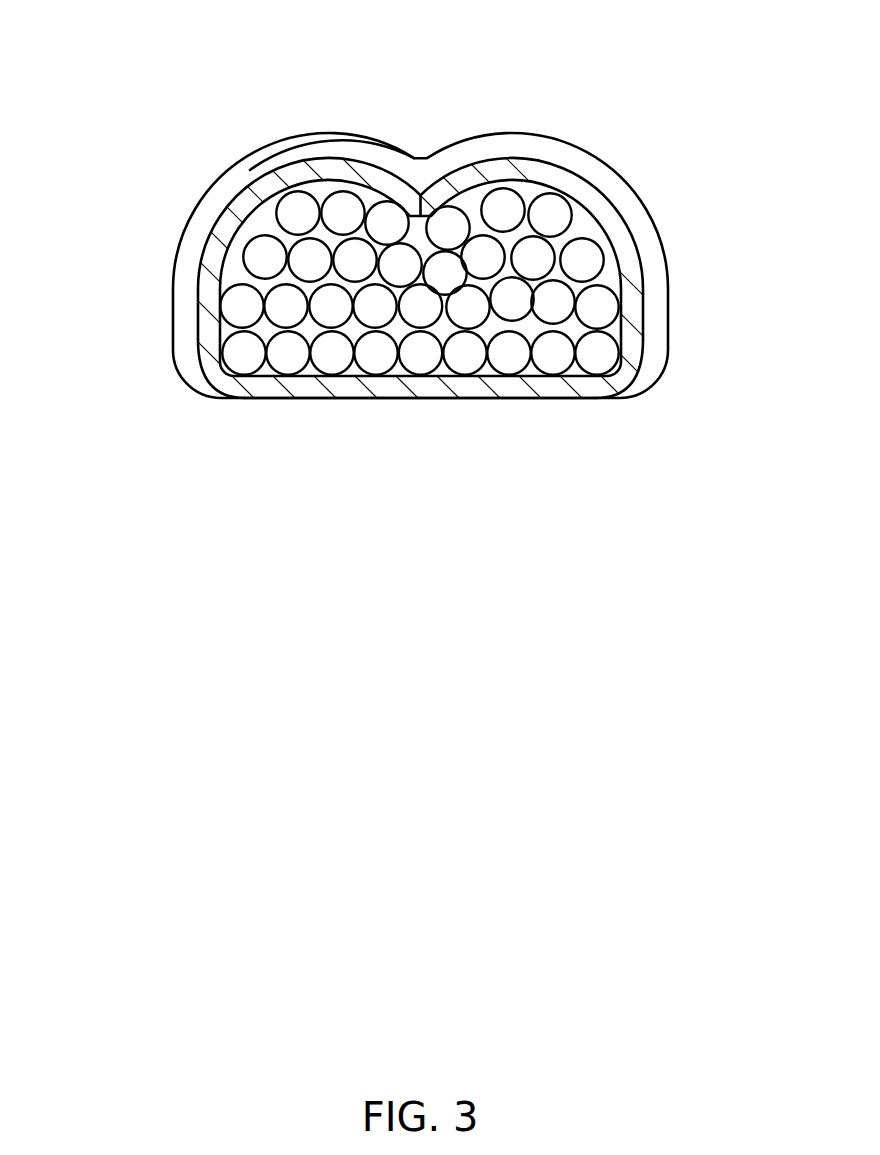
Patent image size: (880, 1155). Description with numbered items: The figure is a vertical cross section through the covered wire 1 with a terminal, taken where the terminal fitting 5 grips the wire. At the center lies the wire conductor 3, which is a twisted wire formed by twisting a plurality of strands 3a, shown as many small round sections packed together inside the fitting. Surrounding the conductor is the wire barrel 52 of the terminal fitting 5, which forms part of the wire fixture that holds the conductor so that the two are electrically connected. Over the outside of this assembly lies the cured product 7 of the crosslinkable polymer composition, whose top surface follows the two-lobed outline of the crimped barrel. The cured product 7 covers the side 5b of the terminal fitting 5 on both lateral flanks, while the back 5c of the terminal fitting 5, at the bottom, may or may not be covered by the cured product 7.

The covered wire with a terminal 1 is at (386, 284).
The wire conductor 3 is at (419, 375).
The strands 3a is at (323, 312).
The terminal fitting 5 is at (385, 306).
The side of the terminal fitting 5b is at (198, 338).
The back of the terminal fitting 5c is at (594, 398).
The wire barrel 52 is at (630, 257).
The cured product 7 is at (333, 132).